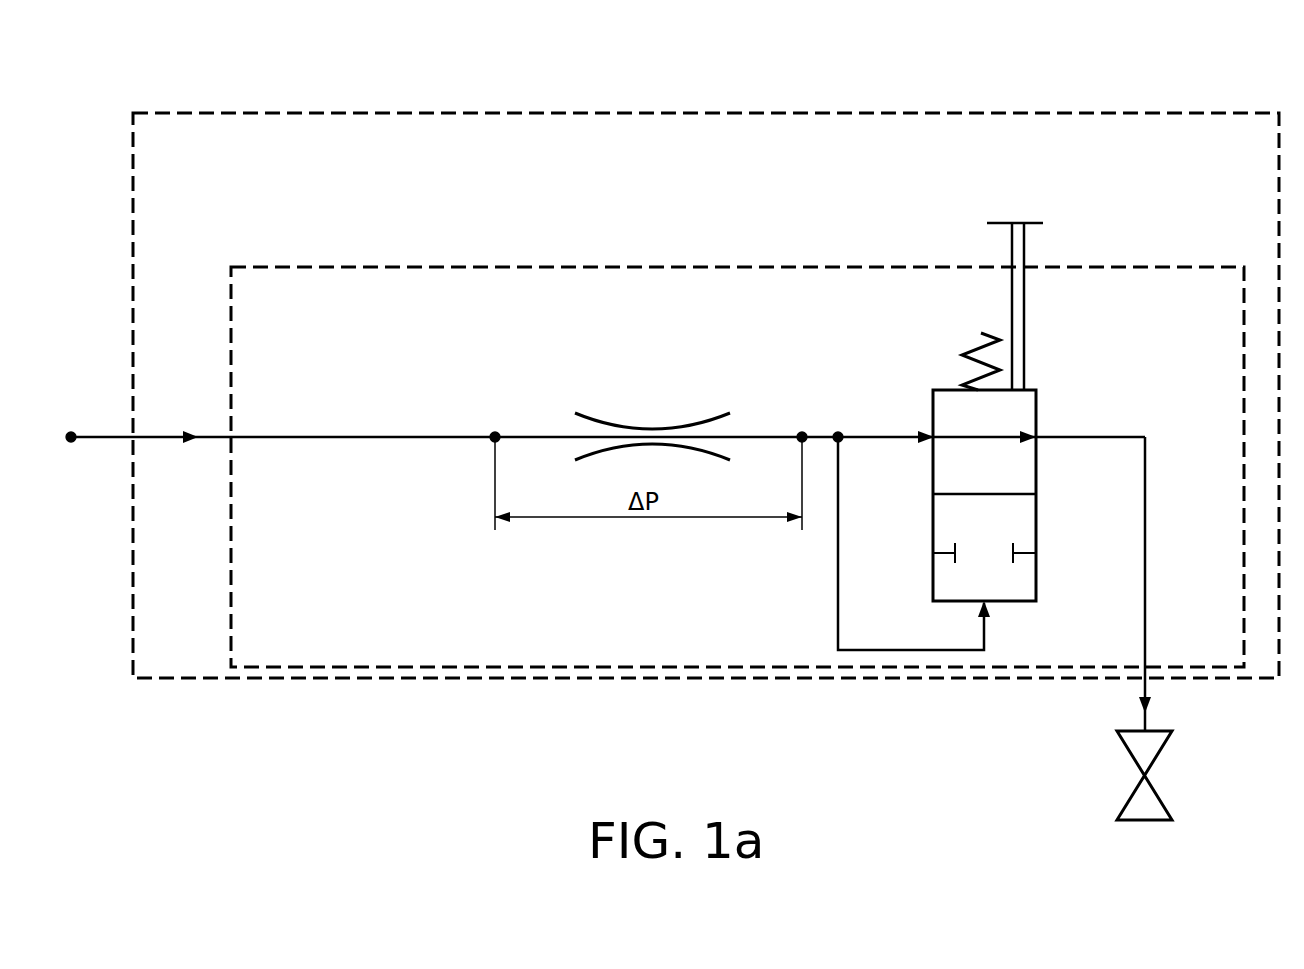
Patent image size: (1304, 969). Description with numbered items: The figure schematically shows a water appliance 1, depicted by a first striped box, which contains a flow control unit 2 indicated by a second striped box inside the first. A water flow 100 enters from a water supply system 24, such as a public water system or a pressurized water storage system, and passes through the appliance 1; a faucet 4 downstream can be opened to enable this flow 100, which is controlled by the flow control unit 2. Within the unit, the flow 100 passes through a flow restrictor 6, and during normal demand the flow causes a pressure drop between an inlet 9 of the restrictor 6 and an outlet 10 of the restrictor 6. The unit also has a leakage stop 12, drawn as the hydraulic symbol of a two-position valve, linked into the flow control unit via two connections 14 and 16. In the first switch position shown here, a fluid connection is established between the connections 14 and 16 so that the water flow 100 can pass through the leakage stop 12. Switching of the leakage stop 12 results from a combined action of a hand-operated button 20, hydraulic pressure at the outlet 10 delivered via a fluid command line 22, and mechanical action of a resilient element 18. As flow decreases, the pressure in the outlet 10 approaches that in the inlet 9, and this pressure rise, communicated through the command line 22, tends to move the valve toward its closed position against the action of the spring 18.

The water appliance 1 is at (505, 74).
The flow control unit 2 is at (524, 232).
The faucet 4 is at (1128, 800).
The flow restrictor 6 is at (651, 428).
The inlet 9 is at (493, 430).
The outlet 10 is at (800, 430).
The leakage stop 12 is at (1040, 398).
The connection 14 is at (931, 435).
The connection 16 is at (1037, 440).
The resilient element 18 is at (978, 346).
The hand-operated button 20 is at (1022, 243).
The fluid command line 22 is at (892, 649).
The water supply system 24 is at (70, 445).
The water flow 100 is at (94, 432).